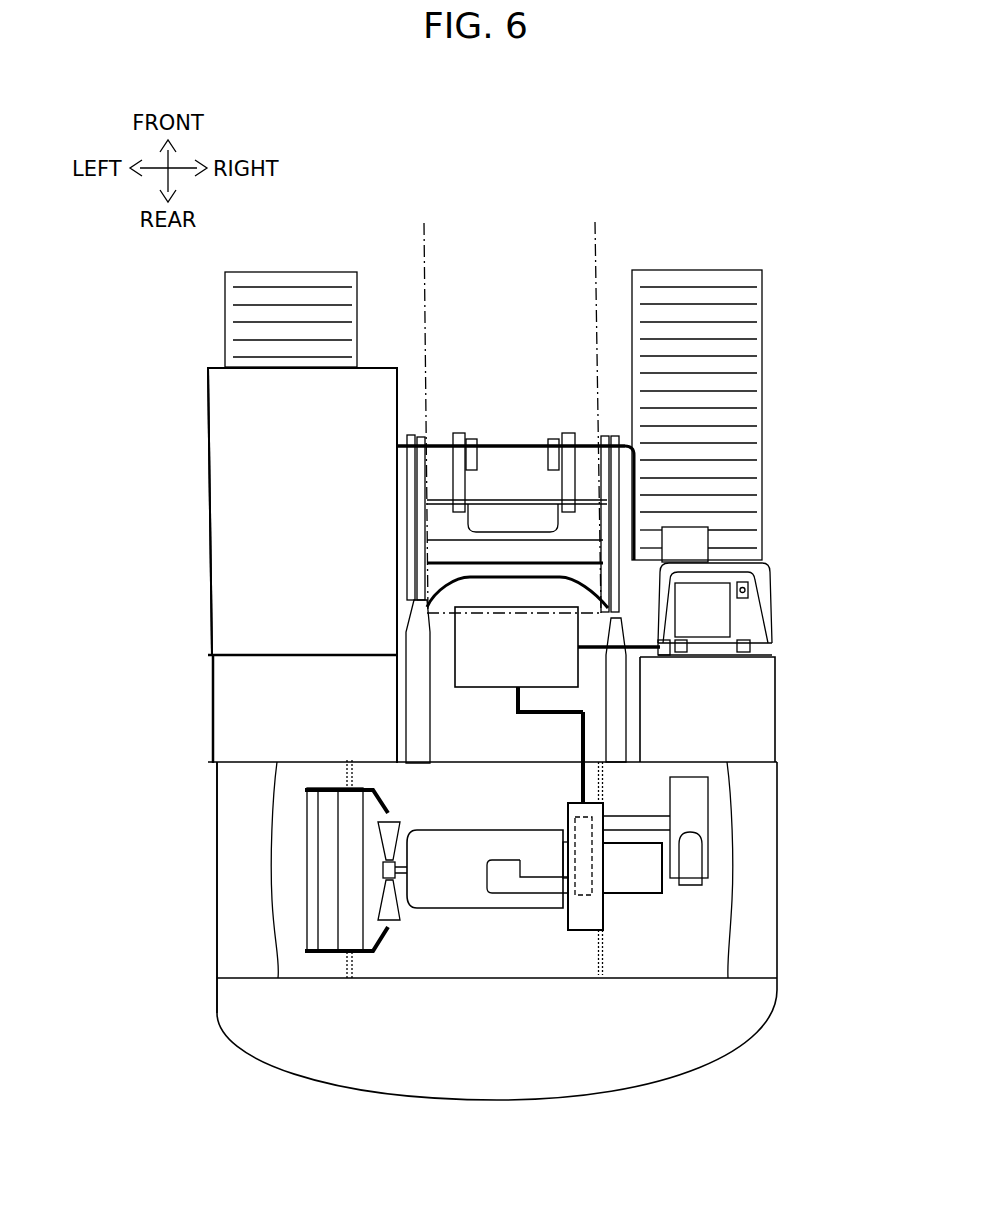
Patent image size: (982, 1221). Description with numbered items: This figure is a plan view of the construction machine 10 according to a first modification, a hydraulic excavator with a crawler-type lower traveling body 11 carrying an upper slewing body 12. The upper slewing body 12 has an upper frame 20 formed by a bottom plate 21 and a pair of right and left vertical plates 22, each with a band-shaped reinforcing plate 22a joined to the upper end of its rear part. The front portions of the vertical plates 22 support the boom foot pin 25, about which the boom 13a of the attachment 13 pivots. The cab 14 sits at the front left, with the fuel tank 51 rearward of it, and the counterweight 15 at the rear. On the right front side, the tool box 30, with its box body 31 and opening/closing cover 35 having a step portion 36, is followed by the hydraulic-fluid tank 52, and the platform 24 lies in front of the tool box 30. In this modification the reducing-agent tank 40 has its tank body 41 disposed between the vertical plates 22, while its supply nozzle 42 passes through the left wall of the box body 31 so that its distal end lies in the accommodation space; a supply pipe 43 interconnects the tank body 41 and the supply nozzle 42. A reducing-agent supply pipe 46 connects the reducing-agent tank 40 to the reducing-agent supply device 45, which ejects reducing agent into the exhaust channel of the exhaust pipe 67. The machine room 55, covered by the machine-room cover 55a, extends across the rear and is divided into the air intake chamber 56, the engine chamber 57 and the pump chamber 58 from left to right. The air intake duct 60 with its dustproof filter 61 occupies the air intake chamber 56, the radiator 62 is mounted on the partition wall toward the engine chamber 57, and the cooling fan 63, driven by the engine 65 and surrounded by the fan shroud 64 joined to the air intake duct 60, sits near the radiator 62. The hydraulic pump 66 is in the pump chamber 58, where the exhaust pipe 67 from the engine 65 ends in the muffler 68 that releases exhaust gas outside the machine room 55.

The construction machine 10 is at (795, 294).
The lower traveling body 11 is at (220, 329).
The upper slewing body 12 is at (196, 411).
The attachment 13 is at (418, 249).
The boom 13a is at (603, 246).
The cab 14 is at (208, 500).
The counterweight 15 is at (778, 993).
The upper frame 20 is at (624, 440).
The bottom plate 21 is at (507, 447).
The vertical plates 22 is at (590, 510).
The reinforcing plate 22a is at (410, 693).
The platform 24 is at (695, 530).
The boom foot pin 25 is at (512, 543).
The tool box 30 is at (774, 578).
The box body 31 is at (765, 588).
The opening/closing cover 35 is at (760, 622).
The step portion 36 is at (717, 590).
The reducing-agent tank 40 is at (457, 692).
The tank body 41 is at (495, 690).
The supply nozzle 42 is at (663, 655).
The supply pipe 43 is at (638, 643).
The reducing-agent supply device 45 is at (582, 930).
The reducing-agent supply pipe 46 is at (580, 743).
The fuel tank 51 is at (214, 693).
The hydraulic-fluid tank 52 is at (767, 700).
The machine room 55 is at (226, 933).
The machine-room cover 55a is at (217, 892).
The air intake chamber 56 is at (294, 955).
The engine chamber 57 is at (485, 954).
The pump chamber 58 is at (673, 954).
The air intake duct 60 is at (320, 780).
The filter 61 is at (308, 872).
The radiator 62 is at (340, 828).
The cooling fan 63 is at (400, 912).
The fan shroud 64 is at (382, 795).
The engine 65 is at (477, 830).
The hydraulic pump 66 is at (633, 890).
The exhaust pipe 67 is at (542, 882).
The muffler 68 is at (690, 883).